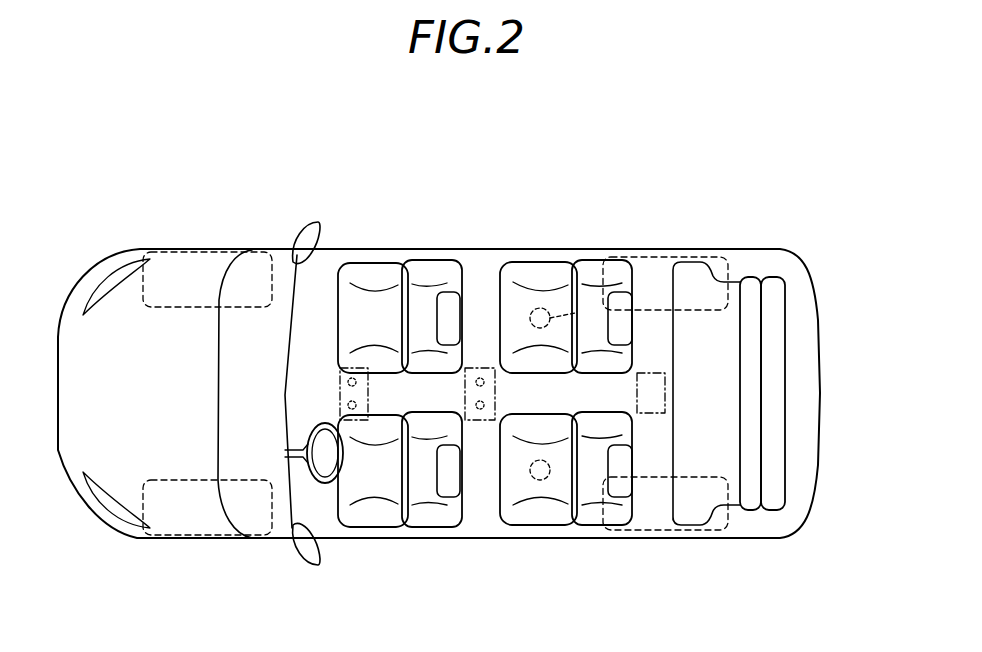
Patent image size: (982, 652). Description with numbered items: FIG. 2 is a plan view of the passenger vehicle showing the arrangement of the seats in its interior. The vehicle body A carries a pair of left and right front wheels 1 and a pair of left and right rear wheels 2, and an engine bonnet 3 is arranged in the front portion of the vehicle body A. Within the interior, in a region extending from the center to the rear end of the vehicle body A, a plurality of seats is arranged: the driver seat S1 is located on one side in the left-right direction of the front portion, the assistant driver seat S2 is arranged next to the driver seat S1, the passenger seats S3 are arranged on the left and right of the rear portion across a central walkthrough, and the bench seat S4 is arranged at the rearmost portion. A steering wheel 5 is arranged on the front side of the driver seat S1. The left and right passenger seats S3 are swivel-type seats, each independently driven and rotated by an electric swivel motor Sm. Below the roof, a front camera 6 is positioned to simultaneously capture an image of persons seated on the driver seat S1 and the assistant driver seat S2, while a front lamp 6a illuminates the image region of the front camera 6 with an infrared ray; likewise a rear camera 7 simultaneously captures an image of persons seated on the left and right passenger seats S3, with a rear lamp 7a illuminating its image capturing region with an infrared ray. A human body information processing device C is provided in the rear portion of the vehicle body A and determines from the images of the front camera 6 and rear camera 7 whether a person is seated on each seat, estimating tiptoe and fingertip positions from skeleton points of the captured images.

The front wheels 1 is at (210, 250).
The rear wheels 2 is at (665, 252).
The engine bonnet 3 is at (88, 402).
The steering wheel 5 is at (318, 424).
The front camera 6 is at (347, 382).
The front lamp 6a is at (360, 404).
The rear camera 7 is at (480, 378).
The rear lamp 7a is at (480, 422).
The vehicle body A is at (450, 248).
The human body information processing device C is at (637, 387).
The driver seat S1 is at (370, 515).
The assistant driver seat S2 is at (368, 270).
The passenger seats S3 is at (530, 272).
The bench seat S4 is at (770, 393).
The electric swivel motor Sm is at (577, 312).